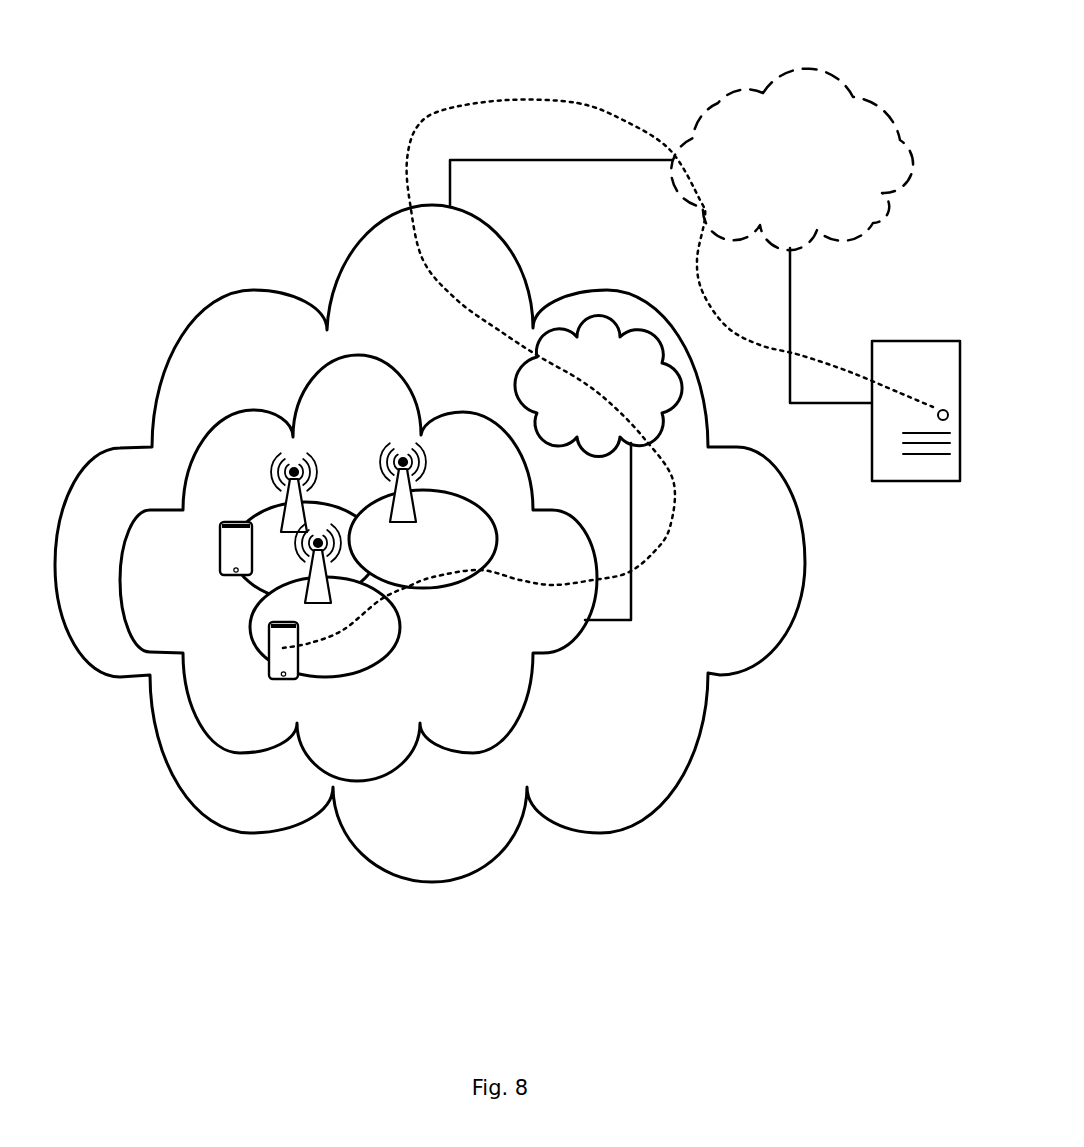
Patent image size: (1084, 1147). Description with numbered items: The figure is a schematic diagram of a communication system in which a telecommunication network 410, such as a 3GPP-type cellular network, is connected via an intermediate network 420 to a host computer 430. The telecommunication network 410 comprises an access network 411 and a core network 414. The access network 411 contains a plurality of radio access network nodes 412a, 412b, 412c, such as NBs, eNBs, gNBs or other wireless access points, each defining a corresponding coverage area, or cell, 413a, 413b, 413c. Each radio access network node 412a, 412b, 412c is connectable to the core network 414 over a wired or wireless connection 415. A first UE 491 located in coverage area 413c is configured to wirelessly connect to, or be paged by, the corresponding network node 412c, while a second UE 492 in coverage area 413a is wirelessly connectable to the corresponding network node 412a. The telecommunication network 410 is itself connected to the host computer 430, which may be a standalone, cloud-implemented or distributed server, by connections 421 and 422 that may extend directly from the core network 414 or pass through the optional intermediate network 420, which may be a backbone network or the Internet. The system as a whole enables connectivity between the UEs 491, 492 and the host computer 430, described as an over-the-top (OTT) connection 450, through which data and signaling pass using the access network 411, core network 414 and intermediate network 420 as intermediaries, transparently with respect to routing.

The telecommunication network 410 is at (375, 310).
The access network 411 is at (332, 420).
The core network 414 is at (583, 370).
The intermediate network 420 is at (773, 174).
The connection 421 is at (577, 160).
The connection 422 is at (827, 405).
The host computer 430 is at (937, 483).
The OTT connection 450 is at (428, 120).
The connection 415 is at (640, 580).
The radio access network node 412a is at (331, 605).
The radio access network node 412b is at (420, 475).
The radio access network node 412c is at (289, 528).
The coverage area 413a is at (398, 642).
The coverage area 413b is at (460, 583).
The coverage area 413c is at (262, 522).
The first UE 491 is at (220, 567).
The second UE 492 is at (275, 681).